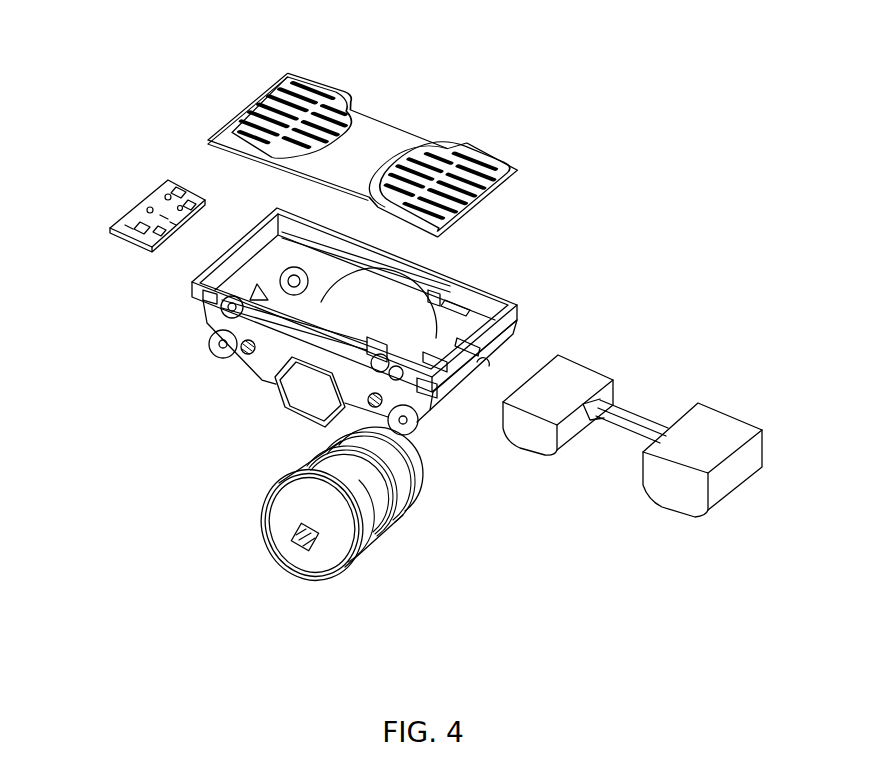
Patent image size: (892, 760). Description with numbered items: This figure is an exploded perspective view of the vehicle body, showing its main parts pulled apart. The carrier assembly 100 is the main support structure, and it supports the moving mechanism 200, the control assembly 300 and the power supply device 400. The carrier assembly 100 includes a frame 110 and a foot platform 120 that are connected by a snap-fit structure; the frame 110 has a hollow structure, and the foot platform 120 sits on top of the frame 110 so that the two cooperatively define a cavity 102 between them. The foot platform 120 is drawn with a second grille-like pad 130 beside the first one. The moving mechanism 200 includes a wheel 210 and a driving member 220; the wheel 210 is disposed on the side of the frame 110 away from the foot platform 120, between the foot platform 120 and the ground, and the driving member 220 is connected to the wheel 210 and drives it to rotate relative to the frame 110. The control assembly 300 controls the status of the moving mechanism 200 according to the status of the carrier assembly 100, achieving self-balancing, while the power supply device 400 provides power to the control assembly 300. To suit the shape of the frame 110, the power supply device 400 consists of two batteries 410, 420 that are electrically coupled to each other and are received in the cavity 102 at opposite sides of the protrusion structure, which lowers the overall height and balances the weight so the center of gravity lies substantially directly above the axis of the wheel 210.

The carrier assembly 100 is at (205, 88).
The cavity 102 is at (470, 308).
The frame 110 is at (258, 377).
The foot platform 120 is at (362, 140).
The grill pad of cover 130 is at (470, 147).
The moving mechanism 200 is at (500, 583).
The wheel 210 is at (403, 520).
The driving member 220 is at (328, 558).
The control assembly 300 is at (140, 197).
The power supply device 400 is at (812, 354).
The battery 410 is at (571, 372).
The battery 420 is at (705, 427).